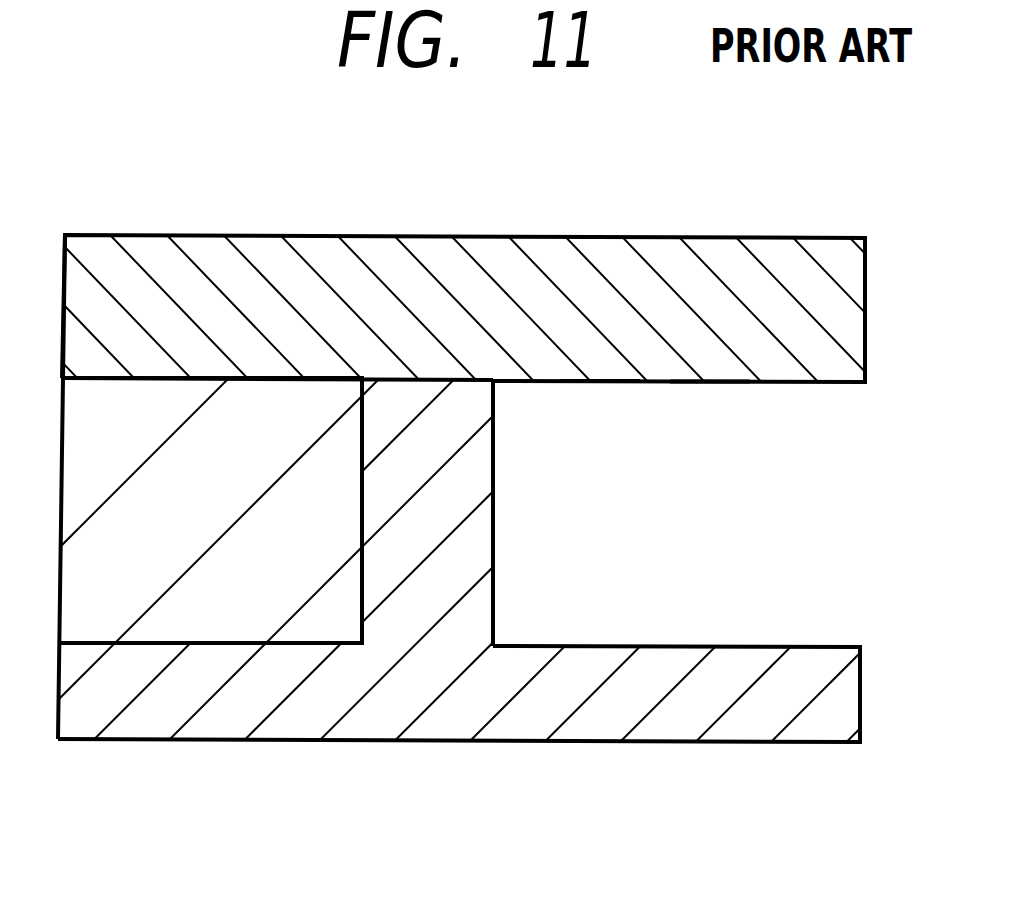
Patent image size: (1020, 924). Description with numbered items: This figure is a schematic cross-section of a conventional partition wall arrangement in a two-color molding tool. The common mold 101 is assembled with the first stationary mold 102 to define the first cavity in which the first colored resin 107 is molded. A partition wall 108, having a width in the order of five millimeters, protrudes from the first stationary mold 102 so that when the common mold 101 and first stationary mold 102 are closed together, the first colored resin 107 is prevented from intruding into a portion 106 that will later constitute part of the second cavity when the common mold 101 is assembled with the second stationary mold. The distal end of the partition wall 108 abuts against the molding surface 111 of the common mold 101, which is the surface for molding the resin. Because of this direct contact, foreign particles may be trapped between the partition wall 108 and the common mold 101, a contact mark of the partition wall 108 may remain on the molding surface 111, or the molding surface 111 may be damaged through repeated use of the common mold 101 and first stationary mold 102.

The common mold 101 is at (470, 250).
The first stationary mold 102 is at (519, 718).
The portion 106 is at (582, 381).
The first colored resin 107 is at (272, 396).
The partition wall 108 is at (473, 584).
The molding surface 111 is at (693, 381).